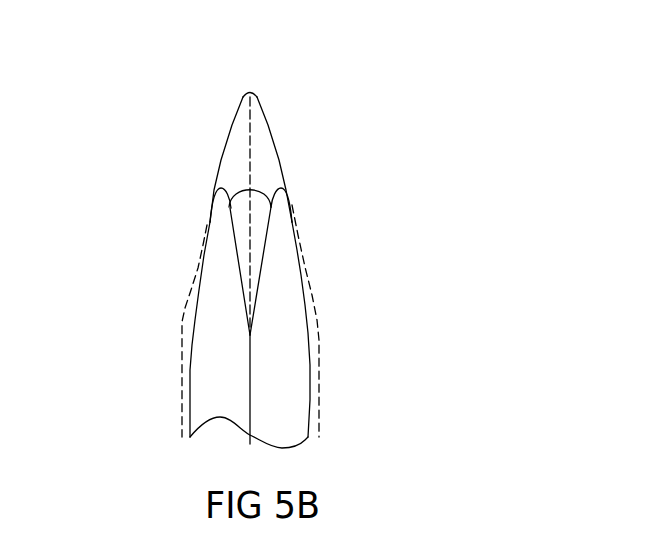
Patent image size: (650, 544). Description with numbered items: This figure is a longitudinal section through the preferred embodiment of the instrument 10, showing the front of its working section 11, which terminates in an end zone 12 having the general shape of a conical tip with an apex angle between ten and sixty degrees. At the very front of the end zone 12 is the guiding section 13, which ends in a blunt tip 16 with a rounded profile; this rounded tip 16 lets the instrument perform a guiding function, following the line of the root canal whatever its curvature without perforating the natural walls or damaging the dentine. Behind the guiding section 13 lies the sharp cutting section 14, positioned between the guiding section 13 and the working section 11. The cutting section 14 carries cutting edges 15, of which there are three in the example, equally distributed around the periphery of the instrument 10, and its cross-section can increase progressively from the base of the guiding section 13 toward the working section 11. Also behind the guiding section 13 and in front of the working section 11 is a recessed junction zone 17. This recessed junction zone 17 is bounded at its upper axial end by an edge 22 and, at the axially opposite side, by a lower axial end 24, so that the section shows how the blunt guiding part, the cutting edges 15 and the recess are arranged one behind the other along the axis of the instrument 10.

The instrument 10 is at (362, 360).
The working section 11 is at (192, 353).
The end zone 12 is at (203, 267).
The guiding section 13 is at (262, 138).
The cutting section 14 is at (213, 220).
The cutting edge 15 is at (270, 237).
The tip 16 is at (253, 95).
The recessed junction zone 17 is at (263, 198).
The edge 22 is at (256, 207).
The lower axial end 24 is at (252, 338).